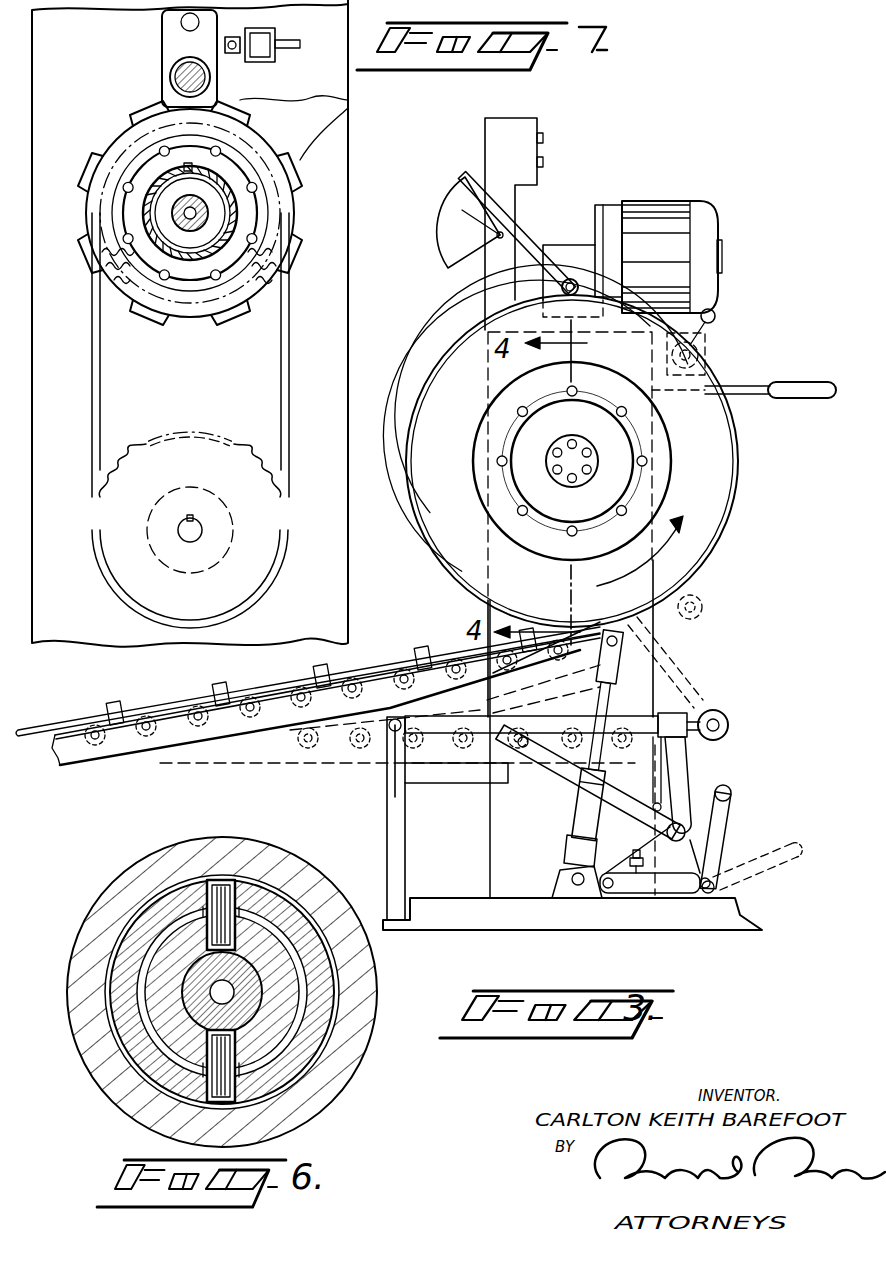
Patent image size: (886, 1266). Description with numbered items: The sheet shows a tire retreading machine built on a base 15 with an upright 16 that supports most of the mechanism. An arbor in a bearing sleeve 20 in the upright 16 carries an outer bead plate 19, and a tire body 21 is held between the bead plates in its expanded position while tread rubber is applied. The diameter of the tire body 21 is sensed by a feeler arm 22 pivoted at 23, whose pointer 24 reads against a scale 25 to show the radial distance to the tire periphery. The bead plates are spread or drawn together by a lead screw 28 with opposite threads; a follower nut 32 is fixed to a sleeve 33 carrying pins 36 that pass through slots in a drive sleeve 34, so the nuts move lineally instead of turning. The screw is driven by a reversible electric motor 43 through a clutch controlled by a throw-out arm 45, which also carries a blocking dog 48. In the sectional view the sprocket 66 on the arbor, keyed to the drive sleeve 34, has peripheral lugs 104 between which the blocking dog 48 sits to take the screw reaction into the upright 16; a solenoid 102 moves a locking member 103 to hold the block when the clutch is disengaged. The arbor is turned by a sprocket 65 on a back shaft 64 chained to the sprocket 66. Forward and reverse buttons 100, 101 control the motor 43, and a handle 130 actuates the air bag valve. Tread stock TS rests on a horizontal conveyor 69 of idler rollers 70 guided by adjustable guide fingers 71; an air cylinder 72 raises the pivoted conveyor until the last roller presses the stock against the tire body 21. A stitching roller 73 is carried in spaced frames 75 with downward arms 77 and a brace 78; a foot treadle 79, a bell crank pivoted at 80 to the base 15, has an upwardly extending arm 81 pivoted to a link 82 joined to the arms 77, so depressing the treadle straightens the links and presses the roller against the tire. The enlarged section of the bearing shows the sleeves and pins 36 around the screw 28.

In FIG. 3, the base 15 is at (428, 896).
In FIG. 7, the upright 16 is at (244, 386).
In FIG. 3, the upright 16 is at (490, 826).
In FIG. 3, the outer bead plate 19 is at (672, 485).
In FIG. 6, the bearing sleeve 20 is at (148, 858).
In FIG. 3, the tire body 21 is at (445, 350).
In FIG. 3, the feeler arm 22 is at (571, 280).
In FIG. 3, the pivot 23 is at (506, 230).
In FIG. 3, the pointer 24 is at (460, 218).
In FIG. 3, the scale 25 is at (456, 202).
In FIG. 7, the lead screw 28 is at (208, 213).
In FIG. 6, the lead screw 28 is at (257, 1010).
In FIG. 6, the follower nut 32 is at (150, 1020).
In FIG. 6, the sleeve 33 is at (124, 934).
In FIG. 6, the drive sleeve 34 is at (310, 966).
In FIG. 6, the pins 36 is at (238, 893).
In FIG. 3, the reversible electric motor 43 is at (690, 206).
In FIG. 7, the throw-out arm 45 is at (170, 79).
In FIG. 3, the throw-out arm 45 is at (745, 388).
In FIG. 7, the blocking dog 48 is at (162, 52).
In FIG. 7, the back shaft 64 is at (200, 540).
In FIG. 7, the sprocket 65 is at (128, 452).
In FIG. 7, the sprocket 66 is at (135, 275).
In FIG. 3, the horizontal conveyor 69 is at (279, 742).
In FIG. 3, the idler rollers 70 is at (272, 703).
In FIG. 3, the guide fingers 71 is at (214, 692).
In FIG. 3, the air cylinder 72 is at (570, 828).
In FIG. 3, the stitching roller 73 is at (726, 716).
In FIG. 3, the frames 75 is at (484, 740).
In FIG. 3, the arms 77 is at (688, 792).
In FIG. 3, the brace 78 is at (566, 783).
In FIG. 3, the foot treadle 79 is at (728, 838).
In FIG. 3, the pivot 80 is at (712, 904).
In FIG. 3, the arm 81 is at (642, 902).
In FIG. 3, the link 82 is at (633, 861).
In FIG. 3, the forward button 100 is at (542, 138).
In FIG. 3, the reverse button 101 is at (542, 163).
In FIG. 7, the solenoid 102 is at (275, 31).
In FIG. 7, the locking member 103 is at (232, 53).
In FIG. 7, the peripheral lugs 104 is at (320, 128).
In FIG. 3, the handle 130 is at (716, 314).
In FIG. 3, the tread stock TS is at (72, 714).